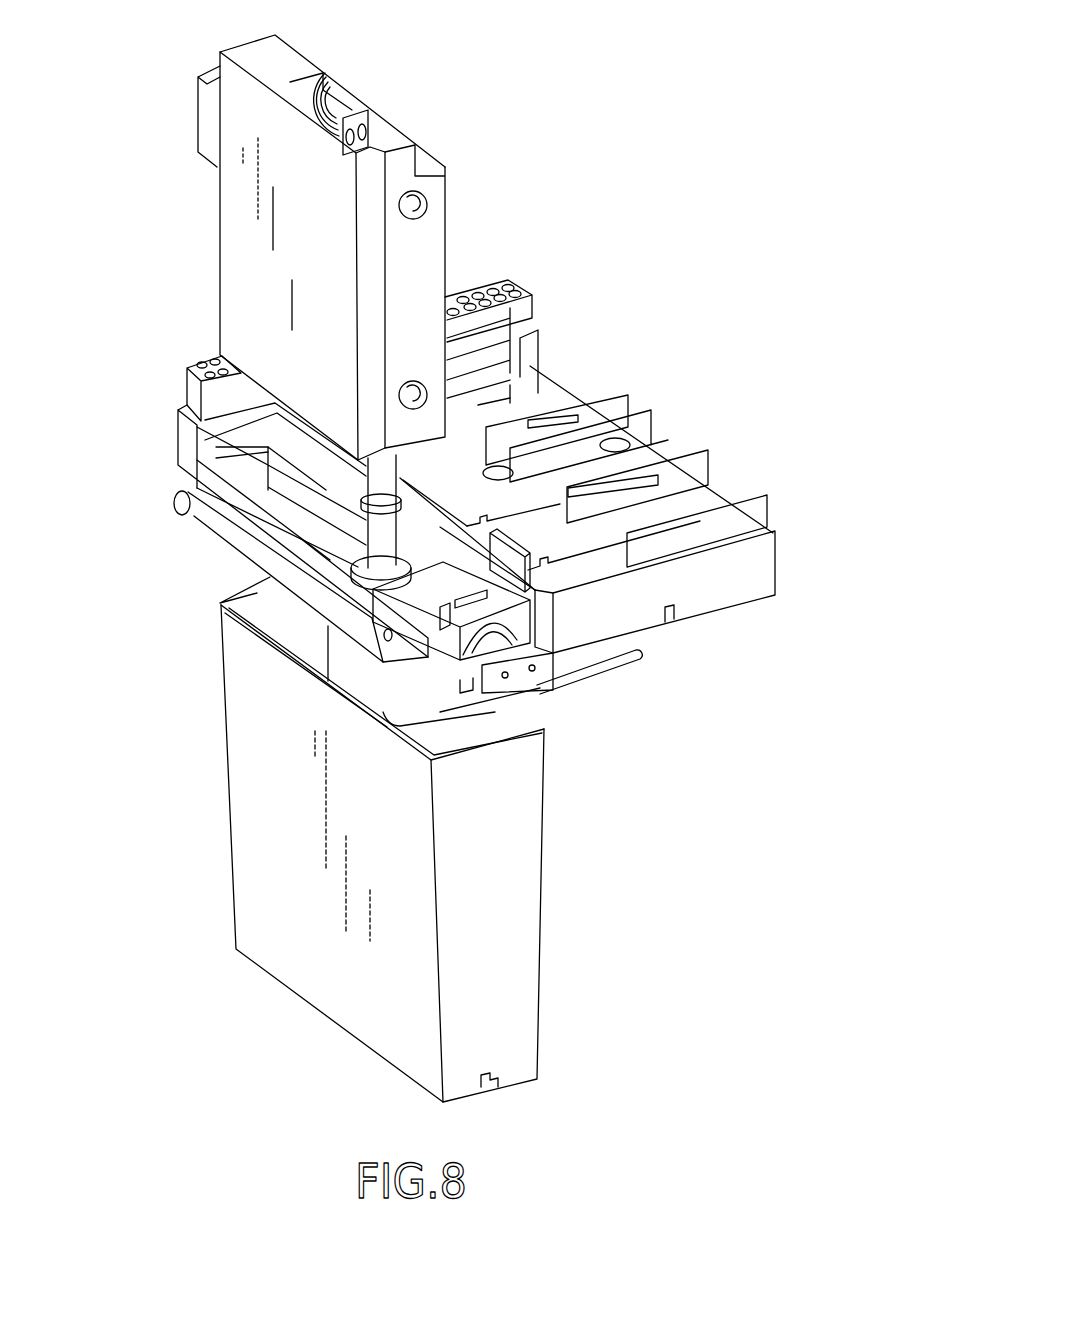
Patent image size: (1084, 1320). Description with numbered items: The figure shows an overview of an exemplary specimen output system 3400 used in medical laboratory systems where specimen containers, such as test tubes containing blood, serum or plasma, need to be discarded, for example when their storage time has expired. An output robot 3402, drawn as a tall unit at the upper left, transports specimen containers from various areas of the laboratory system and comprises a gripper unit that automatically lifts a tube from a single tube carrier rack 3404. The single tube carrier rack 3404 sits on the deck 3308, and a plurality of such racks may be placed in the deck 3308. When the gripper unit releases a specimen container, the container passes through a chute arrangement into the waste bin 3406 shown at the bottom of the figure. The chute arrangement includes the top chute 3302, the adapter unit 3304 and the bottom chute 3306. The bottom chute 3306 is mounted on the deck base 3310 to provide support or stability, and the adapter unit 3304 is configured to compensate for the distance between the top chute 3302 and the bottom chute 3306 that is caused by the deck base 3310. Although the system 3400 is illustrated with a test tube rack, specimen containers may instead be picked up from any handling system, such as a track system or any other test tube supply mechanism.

The specimen output system 3400 is at (638, 88).
The output robot 3402 is at (245, 295).
The single tube carrier rack 3404 is at (470, 292).
The top chute 3302 is at (403, 480).
The adapter unit 3304 is at (377, 522).
The bottom chute 3306 is at (367, 570).
The deck 3308 is at (708, 592).
The deck base 3310 is at (220, 605).
The waste bin 3406 is at (517, 873).